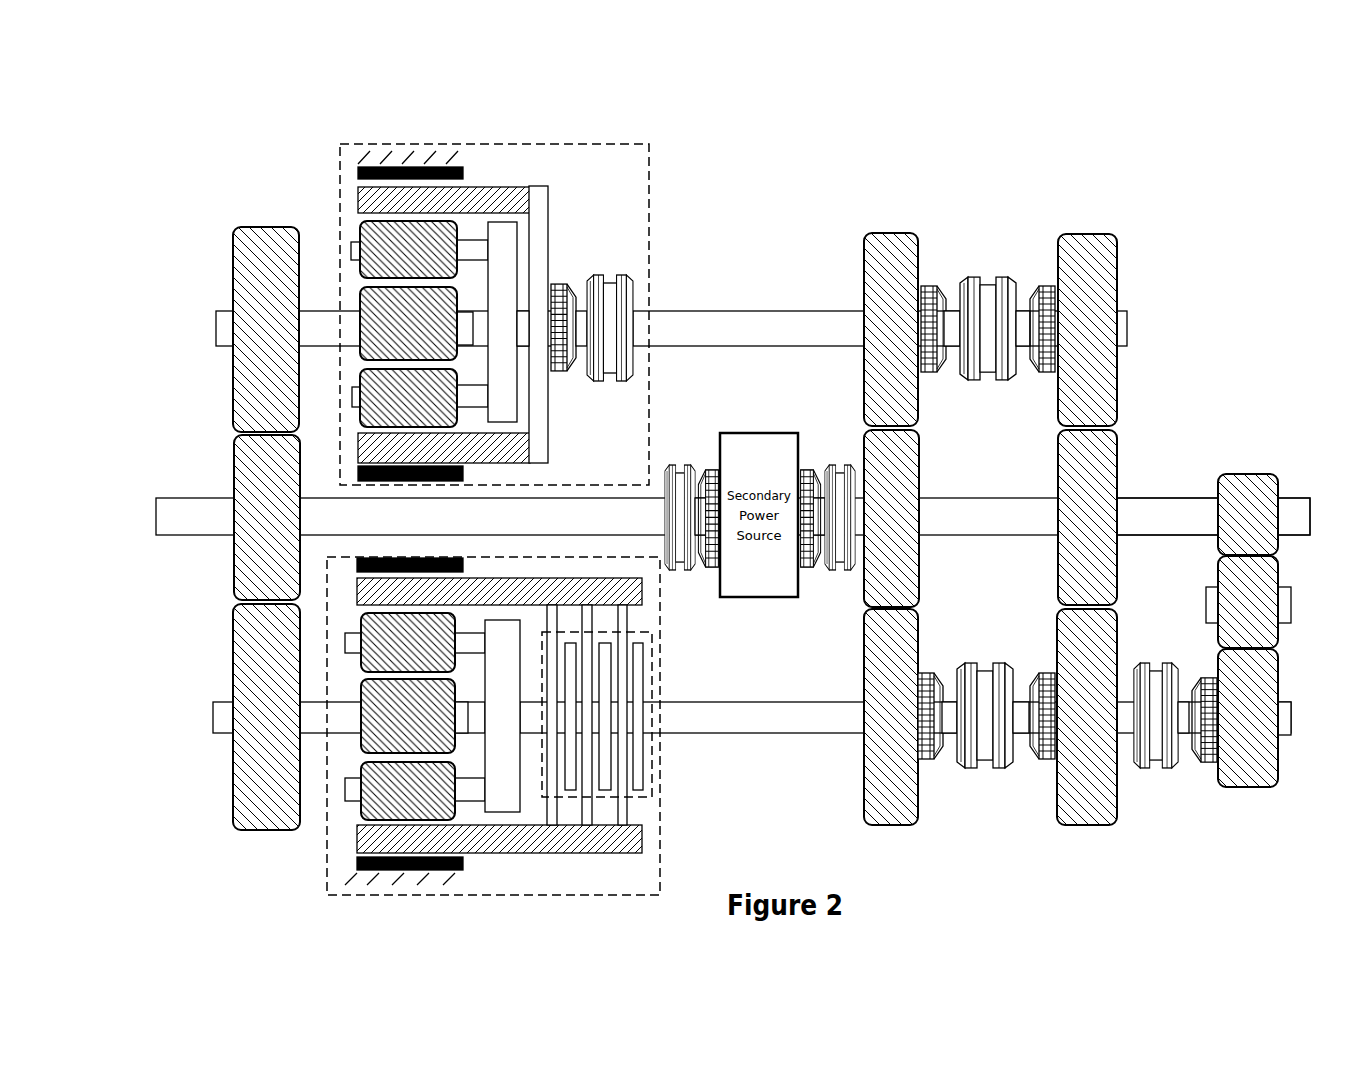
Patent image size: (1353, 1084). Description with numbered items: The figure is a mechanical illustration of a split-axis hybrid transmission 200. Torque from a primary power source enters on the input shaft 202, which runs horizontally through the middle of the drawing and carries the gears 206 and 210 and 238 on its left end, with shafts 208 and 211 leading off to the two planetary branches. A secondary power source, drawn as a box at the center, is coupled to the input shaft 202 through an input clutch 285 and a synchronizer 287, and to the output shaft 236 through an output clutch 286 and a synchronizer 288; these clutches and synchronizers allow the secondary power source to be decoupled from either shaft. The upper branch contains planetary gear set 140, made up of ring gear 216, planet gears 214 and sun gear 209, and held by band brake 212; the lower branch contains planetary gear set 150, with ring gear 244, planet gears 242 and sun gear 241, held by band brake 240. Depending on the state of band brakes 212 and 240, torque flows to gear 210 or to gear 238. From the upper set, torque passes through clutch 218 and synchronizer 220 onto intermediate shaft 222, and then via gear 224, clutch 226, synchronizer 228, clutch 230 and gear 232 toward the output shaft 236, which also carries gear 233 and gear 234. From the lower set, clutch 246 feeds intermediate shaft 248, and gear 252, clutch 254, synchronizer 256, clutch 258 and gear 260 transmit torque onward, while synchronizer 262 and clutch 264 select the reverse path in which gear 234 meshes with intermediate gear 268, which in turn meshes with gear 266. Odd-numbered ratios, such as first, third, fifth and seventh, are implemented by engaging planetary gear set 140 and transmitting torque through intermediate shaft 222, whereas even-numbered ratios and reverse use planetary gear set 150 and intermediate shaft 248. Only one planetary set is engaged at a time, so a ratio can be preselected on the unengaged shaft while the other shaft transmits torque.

The hybrid transmission 200 is at (140, 135).
The planetary gear set 140 is at (651, 154).
The planetary gear set 150 is at (661, 762).
The input shaft 202 is at (157, 493).
The gear 206 is at (233, 440).
The shaft 208 is at (228, 311).
The sun gear 209 is at (461, 301).
The gear 210 is at (250, 225).
The shaft 211 is at (226, 734).
The band brake 212 is at (354, 468).
The planet gears 214 is at (359, 369).
The ring gear 216 is at (501, 187).
The clutch 218 is at (561, 282).
The synchronizer 220 is at (603, 275).
The intermediate shaft 222 is at (688, 310).
The gear 224 is at (884, 231).
The clutch 226 is at (931, 284).
The synchronizer 228 is at (989, 275).
The clutch 230 is at (1041, 283).
The gear 232 is at (1106, 231).
The gear 233 is at (1057, 472).
The gear 234 is at (1217, 546).
The output shaft 236 is at (1143, 497).
The gear 238 is at (231, 686).
The band brake 240 is at (356, 565).
The sun gear 241 is at (459, 686).
The planet gears 242 is at (348, 640).
The ring gear 244 is at (590, 577).
The clutch 246 is at (651, 803).
The intermediate shaft 248 is at (771, 736).
The gear 252 is at (881, 827).
The clutch 254 is at (926, 763).
The synchronizer 256 is at (993, 770).
The clutch 258 is at (1040, 763).
The gear 260 is at (1092, 827).
The synchronizer 262 is at (1148, 770).
The clutch 264 is at (1201, 764).
The gear 266 is at (1249, 789).
The intermediate gear 268 is at (1281, 646).
The input clutch 285 is at (708, 569).
The output clutch 286 is at (808, 569).
The synchronizer 287 is at (668, 465).
The synchronizer 288 is at (838, 465).